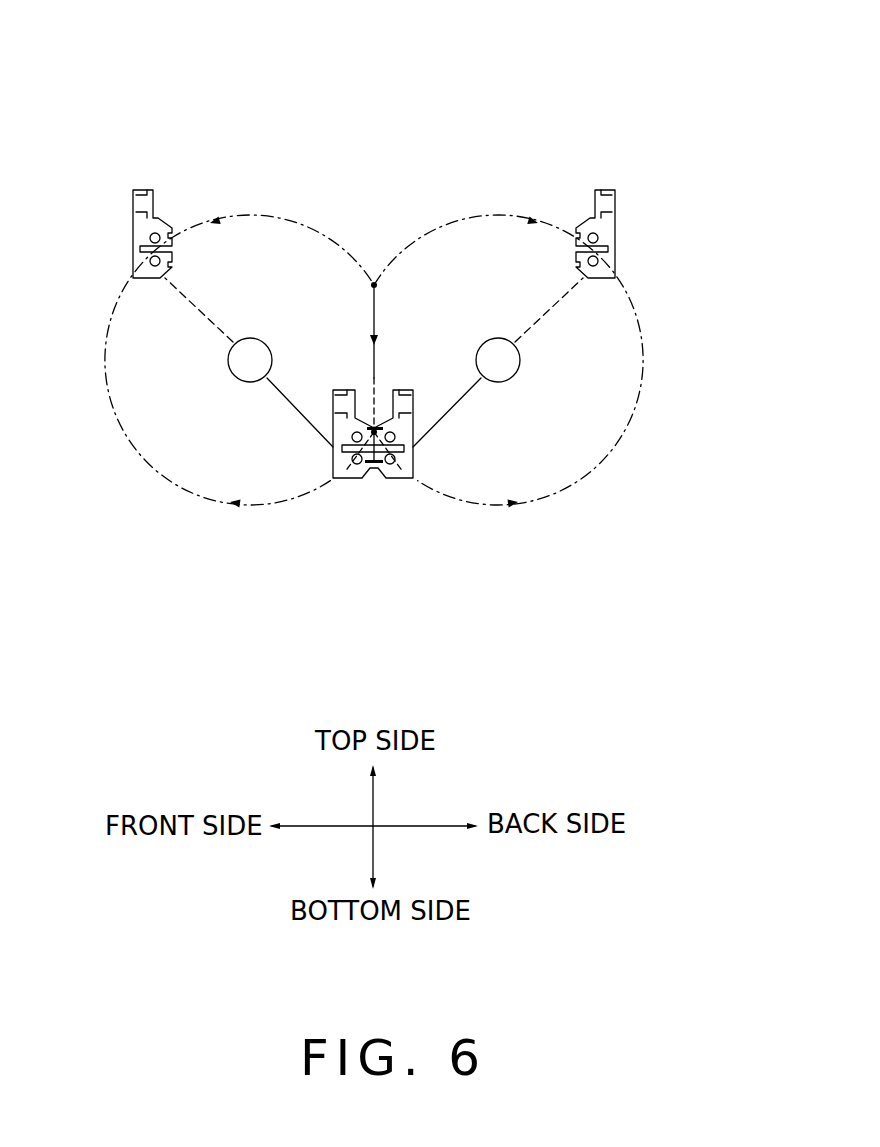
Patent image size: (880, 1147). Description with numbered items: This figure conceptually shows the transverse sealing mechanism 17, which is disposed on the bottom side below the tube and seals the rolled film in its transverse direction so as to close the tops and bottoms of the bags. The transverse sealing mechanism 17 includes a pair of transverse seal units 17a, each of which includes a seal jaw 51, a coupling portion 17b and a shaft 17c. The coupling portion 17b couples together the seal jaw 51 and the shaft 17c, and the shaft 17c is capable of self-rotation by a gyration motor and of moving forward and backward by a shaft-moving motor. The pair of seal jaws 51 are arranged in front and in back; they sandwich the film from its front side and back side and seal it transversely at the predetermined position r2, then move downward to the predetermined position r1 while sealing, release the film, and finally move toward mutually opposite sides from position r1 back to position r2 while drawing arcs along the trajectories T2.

The transverse sealing mechanism 17 is at (372, 447).
The transverse seal unit 17a is at (186, 583).
The coupling portion 17b is at (288, 402).
The shaft 17c is at (250, 365).
The seal jaw 51 is at (145, 192).
The trajectory T2 is at (340, 246).
The predetermined position r1 is at (393, 442).
The predetermined position r2 is at (388, 289).